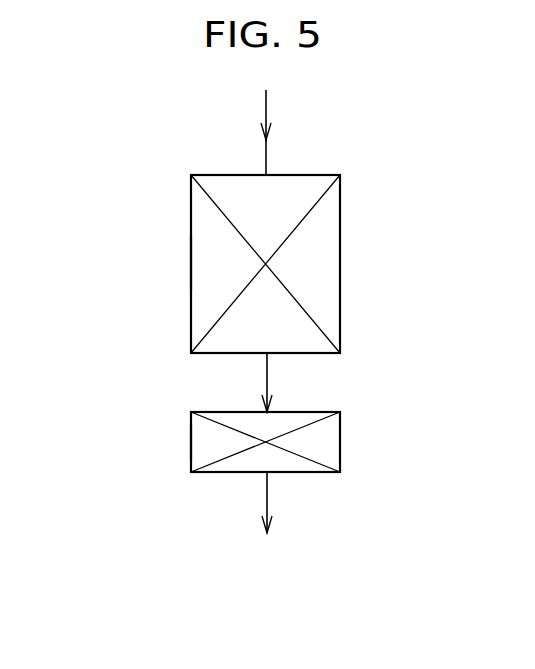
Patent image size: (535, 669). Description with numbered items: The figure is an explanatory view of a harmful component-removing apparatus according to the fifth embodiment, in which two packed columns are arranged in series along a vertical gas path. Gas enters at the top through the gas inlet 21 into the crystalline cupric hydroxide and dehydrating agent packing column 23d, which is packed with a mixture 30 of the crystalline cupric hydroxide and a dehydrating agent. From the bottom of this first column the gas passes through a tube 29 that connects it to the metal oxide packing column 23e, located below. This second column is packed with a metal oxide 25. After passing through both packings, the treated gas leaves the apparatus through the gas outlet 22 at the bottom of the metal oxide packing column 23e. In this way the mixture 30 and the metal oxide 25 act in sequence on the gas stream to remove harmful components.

The gas inlet 21 is at (266, 155).
The mixture of cupric hydroxide and dehydrating agent 30 is at (340, 262).
The crystalline cupric hydroxide and dehydrating agent packing column 23d is at (190, 260).
The tube 29 is at (267, 373).
The metal oxide 25 is at (330, 438).
The metal oxide packing column 23e is at (190, 443).
The gas outlet 22 is at (267, 493).